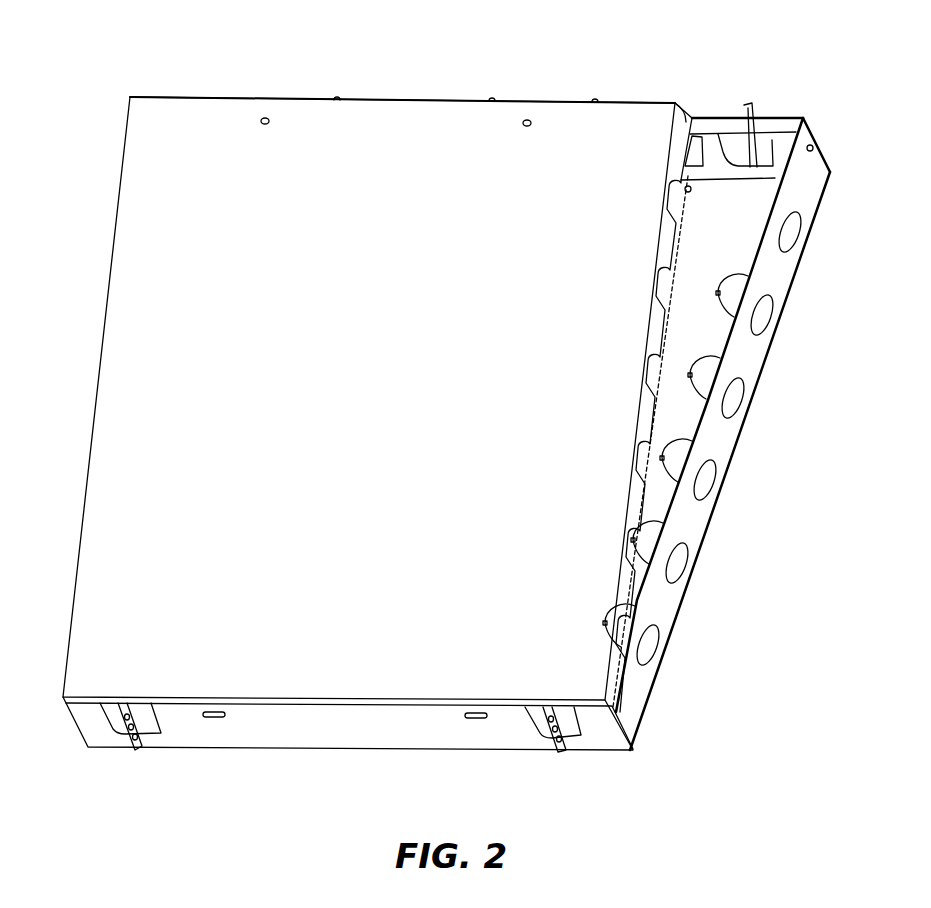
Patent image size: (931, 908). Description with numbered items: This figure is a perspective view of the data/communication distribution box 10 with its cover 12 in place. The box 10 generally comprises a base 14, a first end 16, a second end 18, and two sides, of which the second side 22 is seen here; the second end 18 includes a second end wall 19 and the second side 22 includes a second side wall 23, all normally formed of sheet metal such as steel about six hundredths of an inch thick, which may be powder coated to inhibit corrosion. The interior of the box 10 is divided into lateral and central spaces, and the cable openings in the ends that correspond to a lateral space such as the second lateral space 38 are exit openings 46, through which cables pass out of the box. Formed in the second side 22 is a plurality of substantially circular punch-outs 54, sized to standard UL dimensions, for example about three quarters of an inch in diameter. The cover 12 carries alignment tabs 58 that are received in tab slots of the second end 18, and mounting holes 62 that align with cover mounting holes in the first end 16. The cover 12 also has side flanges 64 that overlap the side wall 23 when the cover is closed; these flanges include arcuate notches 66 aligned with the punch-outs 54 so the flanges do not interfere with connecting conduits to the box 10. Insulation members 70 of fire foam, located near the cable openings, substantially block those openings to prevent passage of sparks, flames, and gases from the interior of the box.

The data/communication distribution box 10 is at (76, 163).
The cover 12 is at (86, 391).
The base 14 is at (710, 274).
The first end 16 is at (733, 70).
The second end 18 is at (249, 770).
The second end wall 19 is at (303, 730).
The second side 22 is at (770, 384).
The second side wall 23 is at (740, 448).
The second lateral space 38 is at (746, 196).
The exit openings 46 is at (765, 86).
The substantially circular punch-outs 54 is at (709, 548).
The alignment tabs 58 is at (472, 722).
The mounting holes 62 is at (264, 131).
The side flanges 64 is at (683, 115).
The arcuate notches 66 is at (672, 292).
The insulation members 70 is at (762, 126).